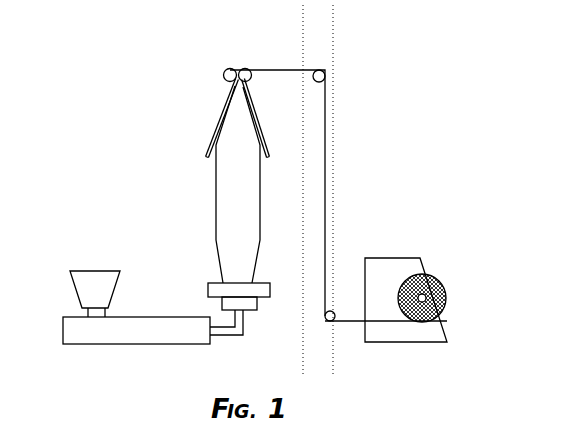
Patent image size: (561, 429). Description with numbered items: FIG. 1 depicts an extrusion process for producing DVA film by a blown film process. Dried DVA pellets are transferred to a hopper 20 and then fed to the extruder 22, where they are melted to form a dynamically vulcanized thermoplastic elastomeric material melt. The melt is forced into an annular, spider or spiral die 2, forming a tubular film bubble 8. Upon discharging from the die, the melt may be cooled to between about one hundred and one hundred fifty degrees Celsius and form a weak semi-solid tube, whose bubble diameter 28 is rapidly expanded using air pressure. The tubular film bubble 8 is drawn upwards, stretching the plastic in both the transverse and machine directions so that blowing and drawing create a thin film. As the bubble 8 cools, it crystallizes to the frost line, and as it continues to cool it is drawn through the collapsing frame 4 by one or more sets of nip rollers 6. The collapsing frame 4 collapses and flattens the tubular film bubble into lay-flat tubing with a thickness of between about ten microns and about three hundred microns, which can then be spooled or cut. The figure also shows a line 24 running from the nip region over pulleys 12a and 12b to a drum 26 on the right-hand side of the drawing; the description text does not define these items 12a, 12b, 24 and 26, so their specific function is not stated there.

The die 2 is at (222, 303).
The collapsing frame 4 is at (218, 110).
The nip rollers 6 is at (225, 72).
The tubular film bubble 8 is at (213, 178).
The upper pulley 12a is at (326, 70).
The lower pulley 12b is at (328, 323).
The hopper 20 is at (78, 307).
The extruder 22 is at (130, 344).
The cable / line 24 is at (300, 69).
The winch drum 26 is at (437, 277).
The bubble diameter 28 is at (378, 257).